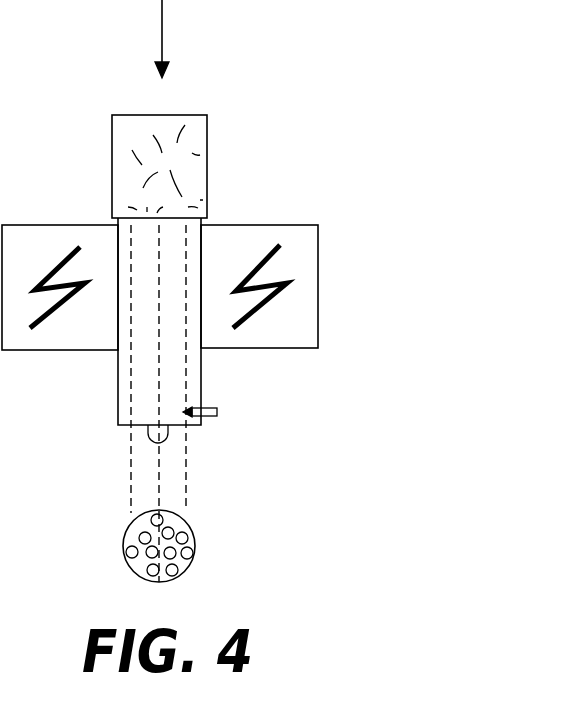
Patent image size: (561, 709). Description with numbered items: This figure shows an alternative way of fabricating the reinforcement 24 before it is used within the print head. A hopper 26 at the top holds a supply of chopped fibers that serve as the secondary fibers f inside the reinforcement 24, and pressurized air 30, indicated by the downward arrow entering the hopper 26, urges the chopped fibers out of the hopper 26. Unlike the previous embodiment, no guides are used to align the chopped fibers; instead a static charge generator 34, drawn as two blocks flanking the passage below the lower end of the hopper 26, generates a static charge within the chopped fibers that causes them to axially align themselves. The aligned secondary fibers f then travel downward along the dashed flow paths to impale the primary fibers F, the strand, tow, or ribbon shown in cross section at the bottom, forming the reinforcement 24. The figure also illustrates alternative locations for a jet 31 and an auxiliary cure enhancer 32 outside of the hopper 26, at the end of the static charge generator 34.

The pressurized air 30 is at (162, 22).
The hopper 26 is at (207, 162).
The static charge generator 34 is at (318, 285).
The jet 31 is at (217, 412).
The auxiliary cure enhancer 32 is at (168, 436).
The secondary fibers f is at (158, 468).
The reinforcement 24 is at (187, 560).
The primary fibers F is at (145, 576).